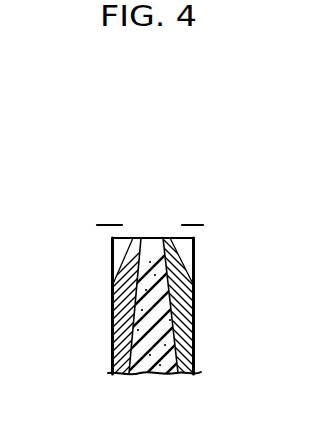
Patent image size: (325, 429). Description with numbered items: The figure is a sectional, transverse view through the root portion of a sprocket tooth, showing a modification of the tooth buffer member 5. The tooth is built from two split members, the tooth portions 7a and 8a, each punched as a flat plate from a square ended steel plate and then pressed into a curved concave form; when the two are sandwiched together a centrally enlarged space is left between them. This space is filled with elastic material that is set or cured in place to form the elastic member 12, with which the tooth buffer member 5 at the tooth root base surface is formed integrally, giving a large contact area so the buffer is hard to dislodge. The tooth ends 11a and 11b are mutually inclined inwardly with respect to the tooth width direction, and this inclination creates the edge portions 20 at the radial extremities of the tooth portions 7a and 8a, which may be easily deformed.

The tooth buffer member 5 is at (149, 238).
The tooth portion 7a is at (122, 353).
The tooth portion 8a is at (185, 353).
The tooth end 11a is at (136, 240).
The tooth end 11b is at (166, 240).
The elastic member 12 is at (178, 312).
The edge portion 20 is at (112, 238).